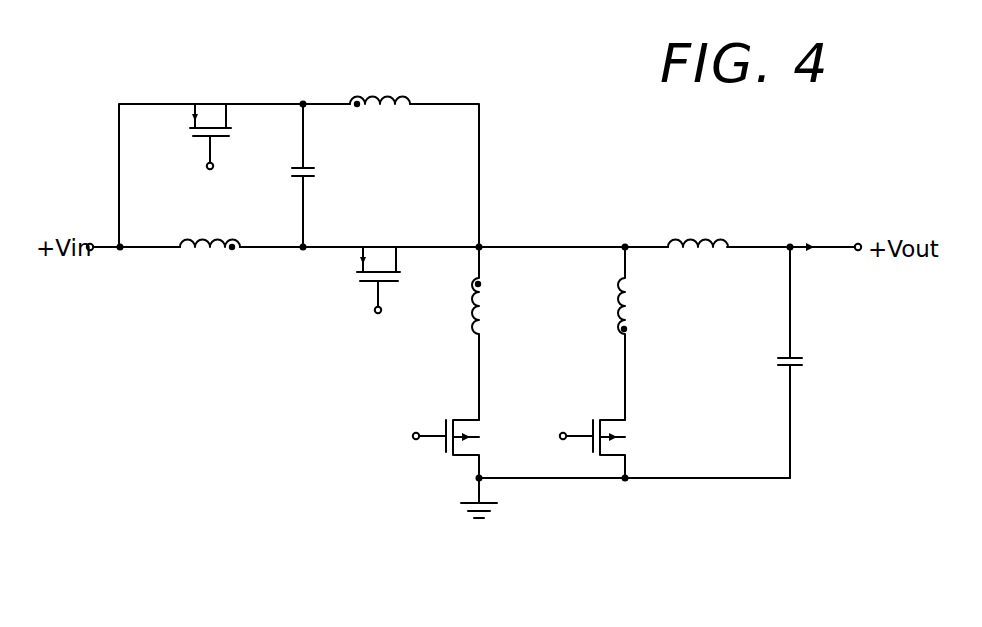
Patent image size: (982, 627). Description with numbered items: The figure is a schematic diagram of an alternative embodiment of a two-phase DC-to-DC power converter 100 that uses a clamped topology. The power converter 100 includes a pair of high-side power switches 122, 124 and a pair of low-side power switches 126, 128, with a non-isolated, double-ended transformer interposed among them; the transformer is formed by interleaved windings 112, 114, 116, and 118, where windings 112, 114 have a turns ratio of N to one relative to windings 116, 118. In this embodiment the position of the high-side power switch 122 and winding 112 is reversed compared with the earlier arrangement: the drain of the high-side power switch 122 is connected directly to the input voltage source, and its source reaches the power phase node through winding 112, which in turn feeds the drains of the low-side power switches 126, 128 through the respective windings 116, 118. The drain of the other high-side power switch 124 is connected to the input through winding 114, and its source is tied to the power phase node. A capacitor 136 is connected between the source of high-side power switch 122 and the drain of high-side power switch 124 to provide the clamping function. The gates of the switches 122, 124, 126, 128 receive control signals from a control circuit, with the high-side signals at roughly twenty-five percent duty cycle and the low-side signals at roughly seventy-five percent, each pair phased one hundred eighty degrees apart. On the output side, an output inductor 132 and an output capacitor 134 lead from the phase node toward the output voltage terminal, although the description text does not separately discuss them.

The two-phase DC-to-DC power converter 100 is at (247, 342).
The winding 112 is at (388, 96).
The winding 114 is at (186, 251).
The winding 116 is at (470, 330).
The winding 118 is at (628, 298).
The high-side power switch 122 is at (211, 100).
The high-side power switch 124 is at (360, 278).
The low-side power switch 126 is at (442, 448).
The low-side power switch 128 is at (633, 428).
The output inductor 132 is at (720, 238).
The output capacitor 134 is at (805, 360).
The capacitor 136 is at (310, 168).